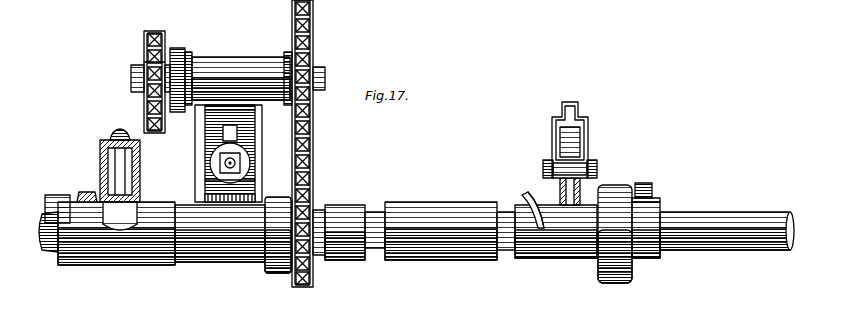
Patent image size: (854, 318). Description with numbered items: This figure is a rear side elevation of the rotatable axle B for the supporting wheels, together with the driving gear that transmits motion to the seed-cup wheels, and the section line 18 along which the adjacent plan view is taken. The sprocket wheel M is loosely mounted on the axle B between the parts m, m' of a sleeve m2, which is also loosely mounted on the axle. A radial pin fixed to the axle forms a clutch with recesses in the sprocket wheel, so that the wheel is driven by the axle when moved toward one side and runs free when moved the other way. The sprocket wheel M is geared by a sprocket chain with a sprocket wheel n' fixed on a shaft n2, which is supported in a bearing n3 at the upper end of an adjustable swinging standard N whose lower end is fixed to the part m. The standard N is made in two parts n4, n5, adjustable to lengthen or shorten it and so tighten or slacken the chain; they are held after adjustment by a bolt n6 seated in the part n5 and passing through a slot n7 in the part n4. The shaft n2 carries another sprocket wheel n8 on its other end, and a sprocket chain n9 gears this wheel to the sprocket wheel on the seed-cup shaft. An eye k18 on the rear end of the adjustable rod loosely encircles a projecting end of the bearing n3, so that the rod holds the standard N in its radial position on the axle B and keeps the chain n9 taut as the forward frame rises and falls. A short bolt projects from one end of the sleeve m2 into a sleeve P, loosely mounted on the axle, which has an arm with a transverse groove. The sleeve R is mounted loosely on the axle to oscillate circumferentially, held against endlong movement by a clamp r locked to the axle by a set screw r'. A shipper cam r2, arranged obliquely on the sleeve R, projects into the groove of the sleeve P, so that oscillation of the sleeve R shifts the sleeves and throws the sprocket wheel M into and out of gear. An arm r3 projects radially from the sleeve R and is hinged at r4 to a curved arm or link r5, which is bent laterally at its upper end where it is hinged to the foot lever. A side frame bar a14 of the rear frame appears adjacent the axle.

The axle B is at (42, 252).
The section line 18— 18 is at (22, 247).
The adjustable swinging standard N is at (210, 115).
The sprocket wheel n' is at (310, 143).
The shaft n2 is at (131, 78).
The bearing n3 is at (245, 62).
The part of standard n4 is at (210, 130).
The part of standard n5 is at (205, 165).
The bolt n6 is at (237, 163).
The slot n7 is at (237, 134).
The sprocket wheel n8 is at (144, 50).
The sprocket chain n9 is at (144, 62).
The eye k18 is at (179, 48).
The side frame bar a14 is at (100, 172).
The part of sleeve m is at (264, 250).
The sprocket wheel M is at (292, 287).
The part of sleeve m' is at (339, 250).
The sleeve m2 is at (340, 205).
The sleeve P is at (440, 283).
The sleeve R is at (580, 259).
The clamp r is at (615, 225).
The set screw r' is at (646, 211).
The shipper cam r2 is at (528, 200).
The arm r3 is at (560, 190).
The hinge r4 is at (592, 168).
The curved arm or link r5 is at (583, 134).